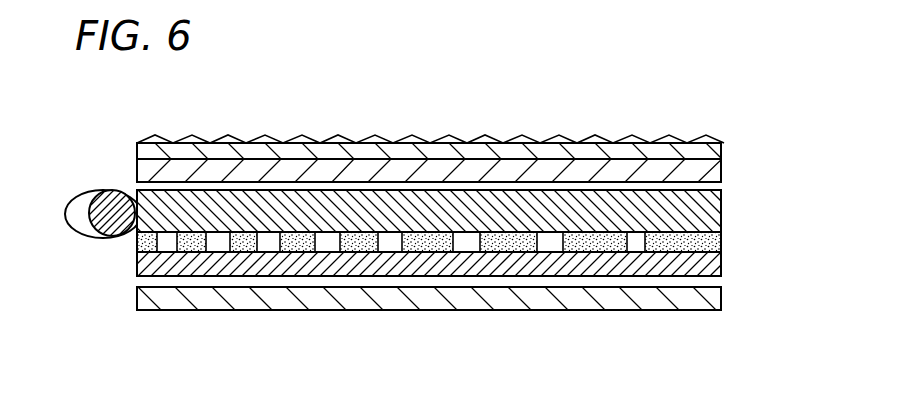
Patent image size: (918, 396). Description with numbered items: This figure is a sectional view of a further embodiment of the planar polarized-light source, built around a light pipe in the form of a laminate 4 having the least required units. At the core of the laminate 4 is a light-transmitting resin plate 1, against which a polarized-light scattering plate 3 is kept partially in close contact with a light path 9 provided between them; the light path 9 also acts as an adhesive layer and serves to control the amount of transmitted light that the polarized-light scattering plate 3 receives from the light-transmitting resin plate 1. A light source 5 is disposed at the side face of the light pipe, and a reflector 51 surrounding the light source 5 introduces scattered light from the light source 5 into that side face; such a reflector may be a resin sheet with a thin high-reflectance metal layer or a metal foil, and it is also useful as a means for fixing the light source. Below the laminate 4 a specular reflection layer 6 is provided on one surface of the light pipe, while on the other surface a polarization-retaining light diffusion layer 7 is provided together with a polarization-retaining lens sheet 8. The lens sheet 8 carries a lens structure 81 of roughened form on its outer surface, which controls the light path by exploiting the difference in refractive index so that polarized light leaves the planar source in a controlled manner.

The light-transmitting resin plate 1 is at (722, 205).
The polarized-light scattering plate 3 is at (456, 266).
The laminate 4 is at (467, 235).
The light source 5 is at (93, 193).
The specular reflection layer 6 is at (722, 298).
The light diffusion layer 7 is at (722, 170).
The lens sheet 8 is at (447, 123).
The light path 9 is at (722, 240).
The reflector 51 is at (73, 229).
The lens structure 81 is at (492, 134).